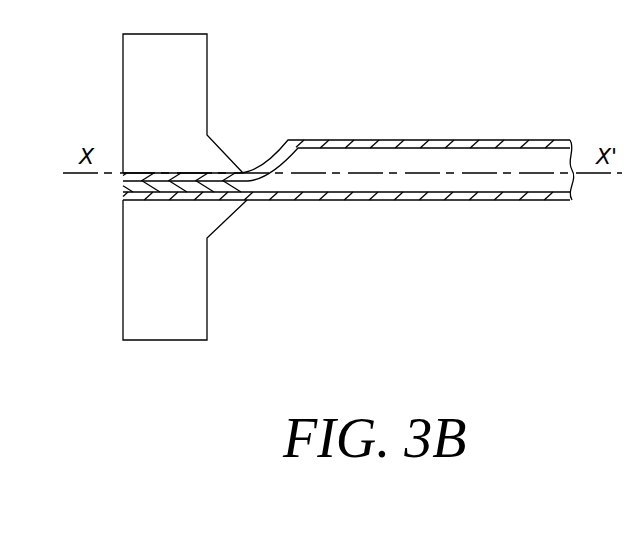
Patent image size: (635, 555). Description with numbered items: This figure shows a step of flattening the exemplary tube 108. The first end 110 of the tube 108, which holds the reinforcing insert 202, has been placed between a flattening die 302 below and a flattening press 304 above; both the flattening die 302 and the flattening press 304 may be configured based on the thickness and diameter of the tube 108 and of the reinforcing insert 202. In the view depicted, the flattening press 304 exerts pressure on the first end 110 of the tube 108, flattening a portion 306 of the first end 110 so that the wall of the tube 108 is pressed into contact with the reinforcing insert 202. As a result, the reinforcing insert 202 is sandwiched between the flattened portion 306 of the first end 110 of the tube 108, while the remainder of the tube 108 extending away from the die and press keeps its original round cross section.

The tube 108 is at (433, 120).
The first end 110 is at (107, 200).
The reinforcing insert 202 is at (237, 185).
The flattening die 302 is at (195, 279).
The flattening press 304 is at (190, 63).
The flattened portion 306 is at (253, 156).